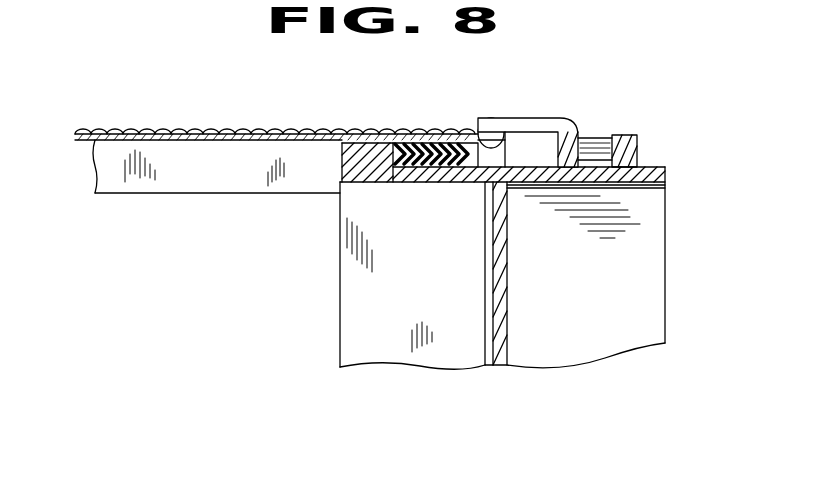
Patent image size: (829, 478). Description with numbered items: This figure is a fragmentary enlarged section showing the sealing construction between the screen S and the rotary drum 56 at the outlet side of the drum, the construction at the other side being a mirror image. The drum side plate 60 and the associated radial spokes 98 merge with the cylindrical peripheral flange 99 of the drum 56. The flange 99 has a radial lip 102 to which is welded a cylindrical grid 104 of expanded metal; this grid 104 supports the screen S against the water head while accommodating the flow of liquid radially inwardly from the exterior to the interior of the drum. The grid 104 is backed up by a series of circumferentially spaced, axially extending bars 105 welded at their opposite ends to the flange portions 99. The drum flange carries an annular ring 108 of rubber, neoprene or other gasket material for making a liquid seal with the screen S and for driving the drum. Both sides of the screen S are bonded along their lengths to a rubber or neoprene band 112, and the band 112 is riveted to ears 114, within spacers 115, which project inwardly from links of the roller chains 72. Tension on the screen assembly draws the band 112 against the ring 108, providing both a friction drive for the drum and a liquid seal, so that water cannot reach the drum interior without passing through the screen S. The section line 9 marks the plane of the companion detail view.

The section line 9- 9 is at (53, 50).
The screen S is at (185, 126).
The cylindrical grid 104 is at (110, 145).
The axially extending bars 105 is at (152, 190).
The radial lip 102 is at (345, 170).
The annular rings 108 is at (412, 168).
The rubber band 112 is at (429, 143).
The spacers 115 is at (477, 140).
The ears 114 is at (527, 118).
The roller chains 72 is at (640, 149).
The peripheral flange 99 is at (662, 178).
The radial spokes 98 is at (438, 291).
The drum side plate 60 is at (510, 255).
The rotary drum 56 is at (675, 243).